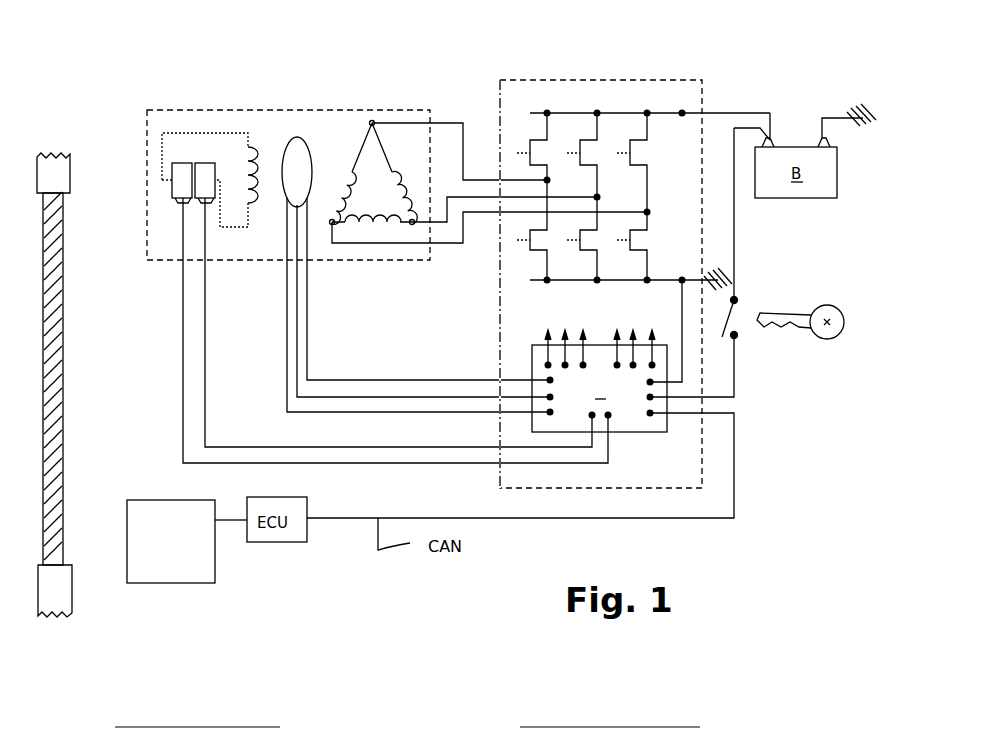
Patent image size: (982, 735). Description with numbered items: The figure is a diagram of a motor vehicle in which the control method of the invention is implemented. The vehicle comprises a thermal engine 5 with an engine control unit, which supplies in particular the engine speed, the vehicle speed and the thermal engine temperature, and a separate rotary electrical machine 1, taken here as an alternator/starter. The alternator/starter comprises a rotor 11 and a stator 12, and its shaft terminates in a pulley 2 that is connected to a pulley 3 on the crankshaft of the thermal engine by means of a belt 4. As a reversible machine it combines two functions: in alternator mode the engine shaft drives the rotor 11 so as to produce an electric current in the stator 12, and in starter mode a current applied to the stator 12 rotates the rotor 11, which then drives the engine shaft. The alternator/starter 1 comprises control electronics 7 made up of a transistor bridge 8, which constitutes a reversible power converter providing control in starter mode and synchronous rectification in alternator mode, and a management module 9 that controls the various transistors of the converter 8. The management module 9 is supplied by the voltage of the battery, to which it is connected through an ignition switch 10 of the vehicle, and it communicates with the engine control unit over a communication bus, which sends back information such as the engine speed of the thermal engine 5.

The rotary electrical machine 1 is at (210, 110).
The pulley 2 is at (70, 168).
The pulley 3 is at (58, 590).
The belt 4 is at (63, 342).
The thermal engine 5 is at (215, 567).
The control electronics 7 is at (690, 80).
The transistor bridge 8 is at (545, 92).
The management module 9 is at (633, 356).
The ignition switch 10 is at (748, 332).
The rotor 11 is at (252, 142).
The stator 12 is at (368, 120).